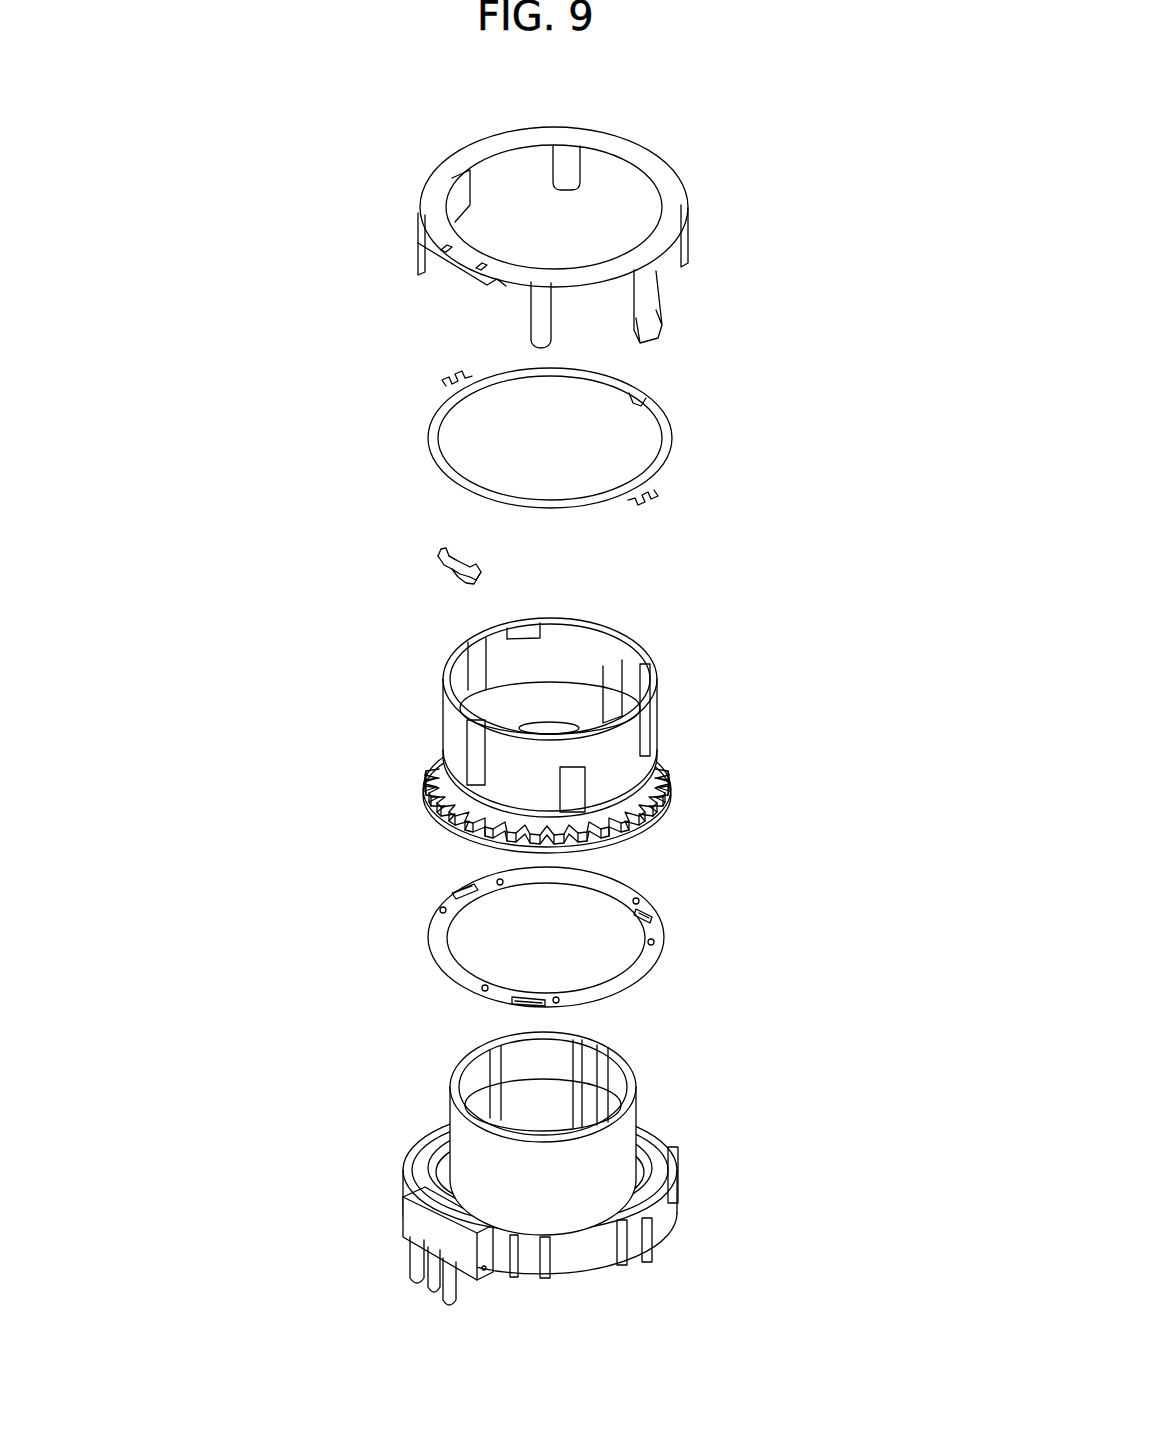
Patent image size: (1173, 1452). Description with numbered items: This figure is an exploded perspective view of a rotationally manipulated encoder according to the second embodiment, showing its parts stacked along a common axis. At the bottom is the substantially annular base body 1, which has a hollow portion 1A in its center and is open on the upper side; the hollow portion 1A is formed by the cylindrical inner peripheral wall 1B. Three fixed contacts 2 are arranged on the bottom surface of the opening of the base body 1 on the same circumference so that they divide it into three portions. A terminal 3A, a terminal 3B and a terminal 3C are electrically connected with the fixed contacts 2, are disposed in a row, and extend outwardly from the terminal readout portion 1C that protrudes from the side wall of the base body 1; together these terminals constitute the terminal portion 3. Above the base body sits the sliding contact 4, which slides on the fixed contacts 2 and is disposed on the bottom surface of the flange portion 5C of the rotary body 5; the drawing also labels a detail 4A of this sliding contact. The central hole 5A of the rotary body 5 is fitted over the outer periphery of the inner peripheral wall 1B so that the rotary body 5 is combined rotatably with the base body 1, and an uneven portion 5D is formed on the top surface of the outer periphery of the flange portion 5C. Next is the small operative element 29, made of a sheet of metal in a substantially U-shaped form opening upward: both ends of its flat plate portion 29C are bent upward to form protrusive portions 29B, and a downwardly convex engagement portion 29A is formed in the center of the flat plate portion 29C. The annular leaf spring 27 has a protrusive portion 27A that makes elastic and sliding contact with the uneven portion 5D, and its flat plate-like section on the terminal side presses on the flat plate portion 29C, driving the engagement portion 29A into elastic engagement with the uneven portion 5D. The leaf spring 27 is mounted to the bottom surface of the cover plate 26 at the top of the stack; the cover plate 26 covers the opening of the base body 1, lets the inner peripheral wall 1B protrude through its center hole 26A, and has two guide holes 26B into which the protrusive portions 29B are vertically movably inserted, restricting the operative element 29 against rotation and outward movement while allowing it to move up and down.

The base body 1 is at (512, 1184).
The hollow portion 1A is at (555, 1097).
The inner peripheral wall 1B is at (608, 1133).
The terminal readout portion 1C is at (417, 1220).
The fixed contacts 2 is at (435, 1178).
The terminal portion 3 is at (357, 1283).
The terminal 3A is at (412, 1275).
The terminal 3B is at (430, 1290).
The terminal 3C is at (445, 1298).
The sliding contact 4 is at (597, 937).
The engaging portion of annular plate 4A is at (655, 920).
The rotary body 5 is at (626, 735).
The central hole 5A is at (560, 705).
The flange portion 5C is at (636, 826).
The uneven portion 5D is at (672, 780).
The cover plate 26 is at (569, 243).
The center hole 26A is at (597, 202).
The guide holes 26B is at (481, 267).
The annular leaf spring 27 is at (610, 435).
The protrusive portion 27A is at (640, 405).
The operative element 29 is at (367, 584).
The engagement portion 29A is at (456, 579).
The protrusive portions 29B is at (438, 556).
The flat plate portion 29C is at (452, 570).